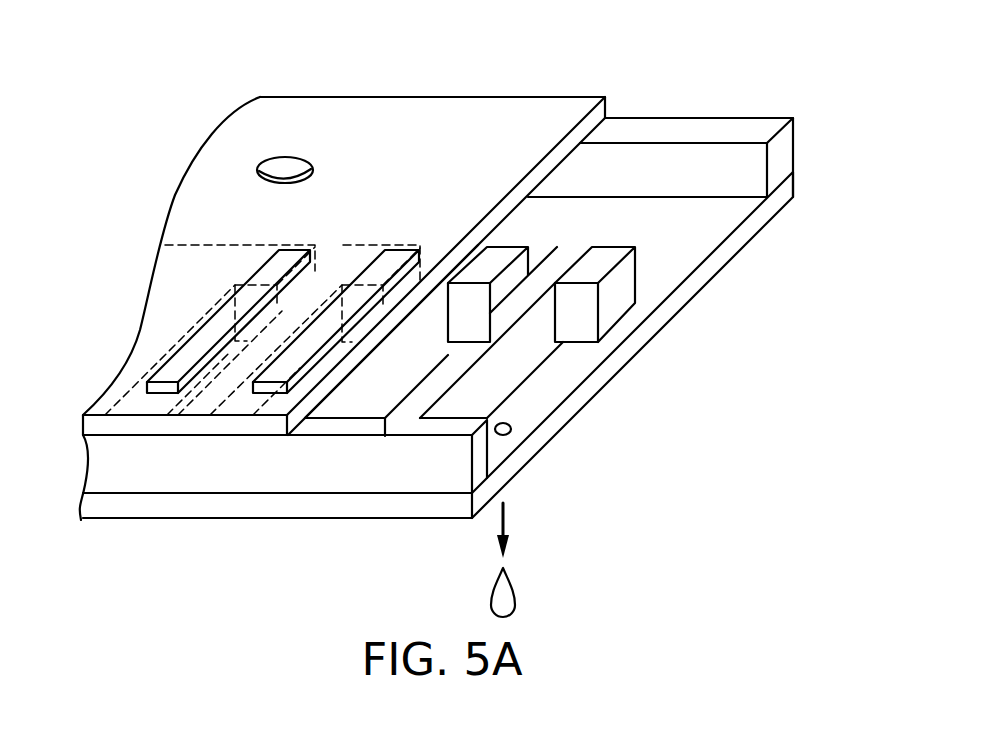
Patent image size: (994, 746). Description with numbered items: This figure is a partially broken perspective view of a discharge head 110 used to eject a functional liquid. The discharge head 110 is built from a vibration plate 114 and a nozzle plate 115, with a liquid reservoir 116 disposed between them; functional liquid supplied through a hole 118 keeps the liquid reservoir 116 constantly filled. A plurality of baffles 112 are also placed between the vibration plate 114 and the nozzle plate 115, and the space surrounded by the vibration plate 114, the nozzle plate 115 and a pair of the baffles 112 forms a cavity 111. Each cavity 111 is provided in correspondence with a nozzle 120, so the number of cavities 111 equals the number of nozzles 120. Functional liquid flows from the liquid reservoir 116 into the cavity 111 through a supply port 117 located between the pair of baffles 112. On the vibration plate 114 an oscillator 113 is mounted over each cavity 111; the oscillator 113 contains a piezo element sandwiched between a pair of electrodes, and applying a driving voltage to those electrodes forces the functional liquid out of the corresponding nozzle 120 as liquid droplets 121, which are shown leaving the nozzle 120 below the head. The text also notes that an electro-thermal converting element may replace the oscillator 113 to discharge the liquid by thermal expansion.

The discharge head 110 is at (725, 70).
The cavity 111 is at (428, 350).
The baffle 112 is at (482, 337).
The oscillator 113 is at (185, 358).
The vibration plate 114 is at (305, 408).
The nozzle plate 115 is at (675, 297).
The liquid reservoir 116 is at (705, 232).
The supply port 117 is at (513, 273).
The hole 118 is at (286, 170).
The nozzle 120 is at (510, 428).
The liquid droplets 121 is at (500, 600).